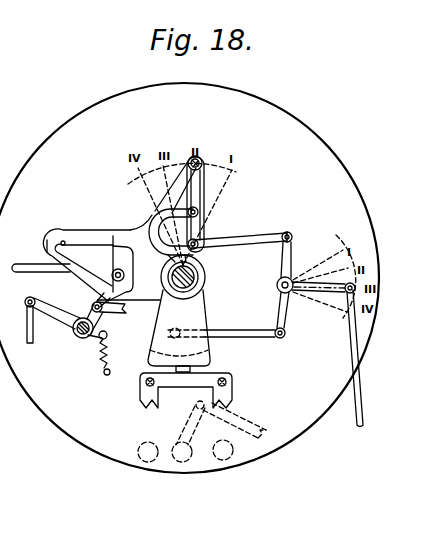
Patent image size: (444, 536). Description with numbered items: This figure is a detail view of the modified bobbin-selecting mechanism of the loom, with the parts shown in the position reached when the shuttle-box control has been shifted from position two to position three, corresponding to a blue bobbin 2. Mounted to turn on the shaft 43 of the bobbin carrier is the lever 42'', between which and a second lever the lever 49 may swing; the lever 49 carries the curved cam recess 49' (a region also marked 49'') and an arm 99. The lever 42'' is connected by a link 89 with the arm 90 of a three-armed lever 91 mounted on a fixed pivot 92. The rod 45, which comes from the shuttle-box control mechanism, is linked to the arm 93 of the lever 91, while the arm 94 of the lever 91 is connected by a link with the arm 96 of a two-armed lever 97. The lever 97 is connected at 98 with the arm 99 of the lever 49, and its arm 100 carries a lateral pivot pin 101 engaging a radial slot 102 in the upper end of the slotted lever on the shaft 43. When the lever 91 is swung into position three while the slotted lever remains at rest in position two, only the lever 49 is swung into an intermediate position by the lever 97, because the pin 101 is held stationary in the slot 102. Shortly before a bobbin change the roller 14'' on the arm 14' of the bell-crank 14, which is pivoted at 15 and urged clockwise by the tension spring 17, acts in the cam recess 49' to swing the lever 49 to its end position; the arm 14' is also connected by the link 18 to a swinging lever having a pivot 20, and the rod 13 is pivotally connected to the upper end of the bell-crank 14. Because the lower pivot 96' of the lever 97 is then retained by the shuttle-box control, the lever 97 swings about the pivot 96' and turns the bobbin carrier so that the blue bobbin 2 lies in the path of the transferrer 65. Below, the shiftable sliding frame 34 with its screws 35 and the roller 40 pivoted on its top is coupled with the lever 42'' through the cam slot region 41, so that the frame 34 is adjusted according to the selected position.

The bobbin 2 is at (140, 443).
The rod 13 is at (27, 330).
The bell-crank 14 is at (64, 333).
The arm of the bell-crank 14' is at (91, 297).
The roller 14'' is at (110, 273).
The pivot 15 is at (78, 342).
The tension spring 17 is at (100, 372).
The link 18 is at (28, 264).
The pivot 20 is at (180, 193).
The shiftable sliding frame 34 is at (185, 380).
The screws 35 is at (234, 380).
The roller 40 is at (176, 368).
The arm 41 is at (207, 357).
The lever 42'' is at (193, 328).
The shaft 43 is at (205, 283).
The rod 45 is at (364, 388).
The lever 49 is at (86, 249).
The curved cam recess 49' is at (50, 230).
The hook side 49'' is at (113, 249).
The transferrer 65 is at (262, 426).
The link 89 is at (280, 342).
The arm 90 is at (279, 301).
The three-armed lever 91 is at (283, 268).
The fixed pivot 92 is at (291, 276).
The arm 93 is at (318, 292).
The arm 94 is at (292, 247).
The arm 96 is at (240, 230).
The lower pivot 96' is at (257, 247).
The two-armed lever 97 is at (206, 197).
The connection 98 is at (166, 215).
The arm 99 is at (142, 221).
The arm 100 is at (206, 182).
The lateral pivot pin 101 is at (207, 160).
The radial slot 102 is at (192, 158).